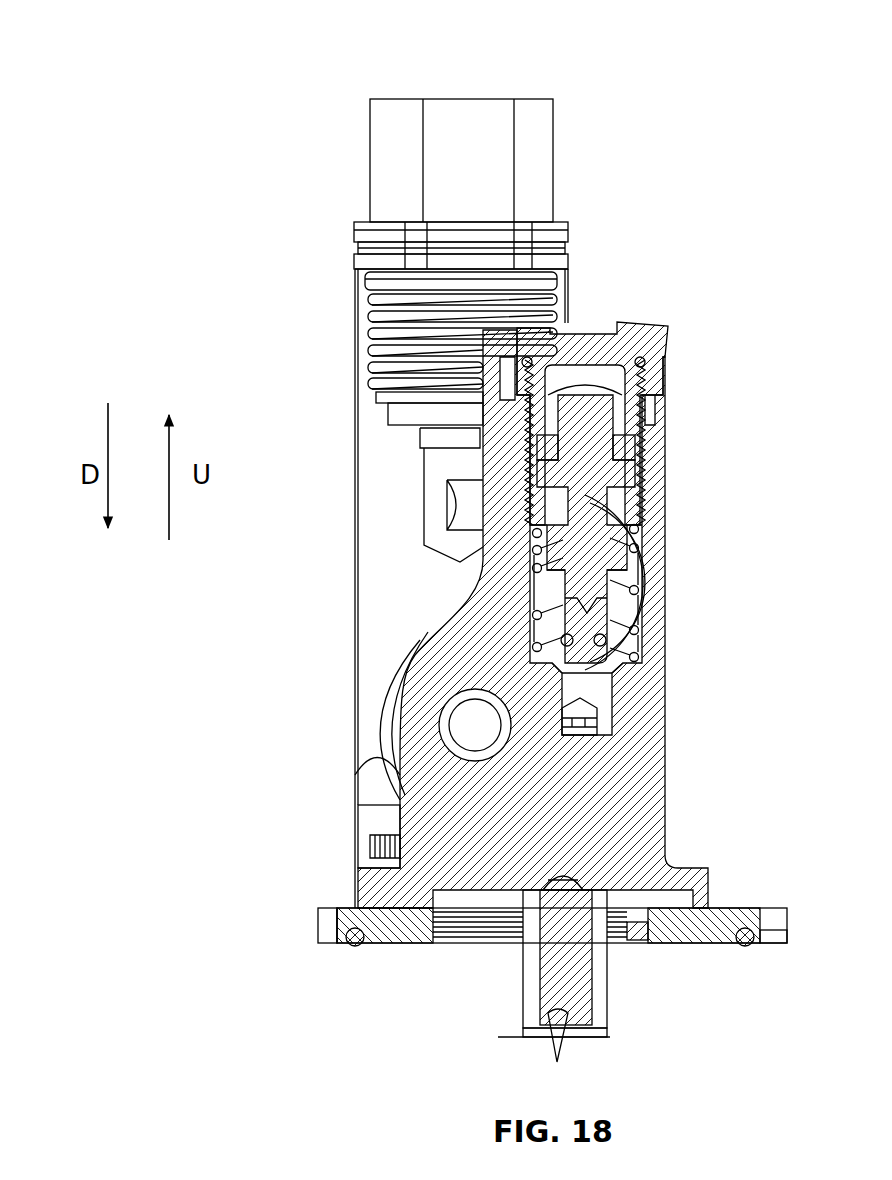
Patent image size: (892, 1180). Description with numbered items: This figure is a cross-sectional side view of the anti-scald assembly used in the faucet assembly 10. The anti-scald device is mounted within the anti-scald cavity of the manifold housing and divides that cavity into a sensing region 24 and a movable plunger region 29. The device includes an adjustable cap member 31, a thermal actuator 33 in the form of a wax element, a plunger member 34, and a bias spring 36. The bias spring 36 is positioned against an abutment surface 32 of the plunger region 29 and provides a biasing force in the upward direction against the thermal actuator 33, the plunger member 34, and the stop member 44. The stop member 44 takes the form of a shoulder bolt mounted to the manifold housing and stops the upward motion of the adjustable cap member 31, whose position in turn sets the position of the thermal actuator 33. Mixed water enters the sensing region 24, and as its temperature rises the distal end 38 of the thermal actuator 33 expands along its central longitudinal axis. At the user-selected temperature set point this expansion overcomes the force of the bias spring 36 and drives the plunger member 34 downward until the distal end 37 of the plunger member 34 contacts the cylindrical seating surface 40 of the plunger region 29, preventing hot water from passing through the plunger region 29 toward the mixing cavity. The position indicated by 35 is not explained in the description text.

The faucet assembly 10 is at (418, 46).
The sensing region 24 is at (668, 408).
The plunger region 29 is at (526, 587).
The adjustable cap member 31 is at (632, 338).
The abutment surface 32 is at (569, 690).
The thermal actuator 33 is at (641, 398).
The plunger member 34 is at (592, 598).
The spring seat 35 is at (652, 532).
The bias spring 36 is at (607, 648).
The distal end of plunger member 37 is at (563, 657).
The distal end of thermal actuator 38 is at (610, 632).
The cylindrical seating surface 40 is at (623, 683).
The stop member 44 is at (483, 322).